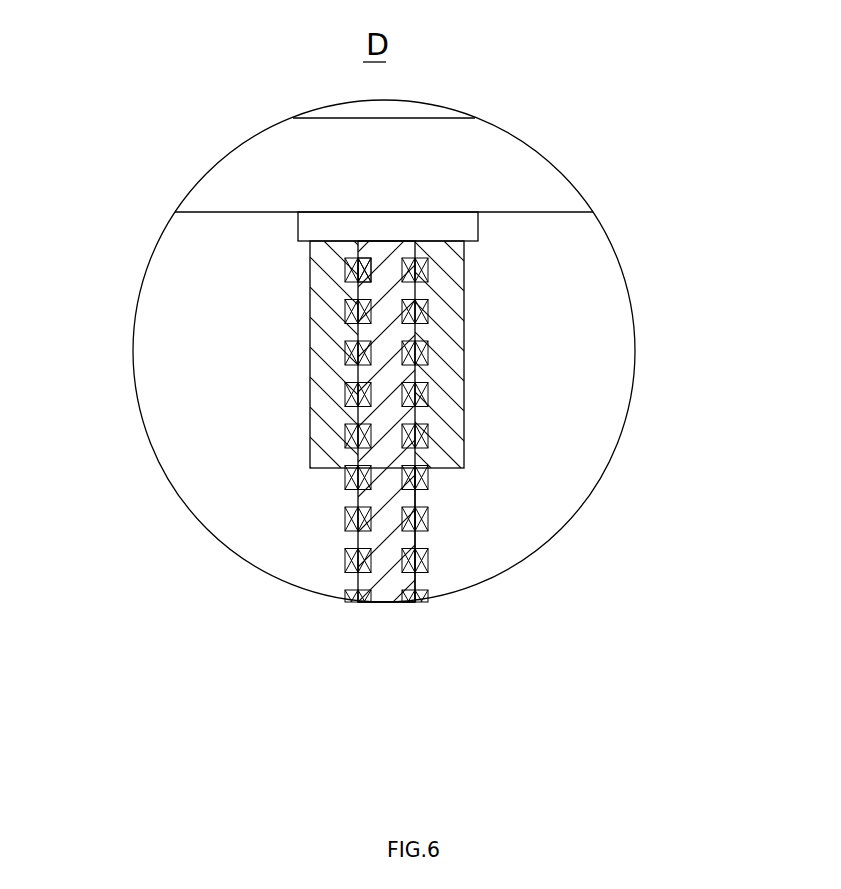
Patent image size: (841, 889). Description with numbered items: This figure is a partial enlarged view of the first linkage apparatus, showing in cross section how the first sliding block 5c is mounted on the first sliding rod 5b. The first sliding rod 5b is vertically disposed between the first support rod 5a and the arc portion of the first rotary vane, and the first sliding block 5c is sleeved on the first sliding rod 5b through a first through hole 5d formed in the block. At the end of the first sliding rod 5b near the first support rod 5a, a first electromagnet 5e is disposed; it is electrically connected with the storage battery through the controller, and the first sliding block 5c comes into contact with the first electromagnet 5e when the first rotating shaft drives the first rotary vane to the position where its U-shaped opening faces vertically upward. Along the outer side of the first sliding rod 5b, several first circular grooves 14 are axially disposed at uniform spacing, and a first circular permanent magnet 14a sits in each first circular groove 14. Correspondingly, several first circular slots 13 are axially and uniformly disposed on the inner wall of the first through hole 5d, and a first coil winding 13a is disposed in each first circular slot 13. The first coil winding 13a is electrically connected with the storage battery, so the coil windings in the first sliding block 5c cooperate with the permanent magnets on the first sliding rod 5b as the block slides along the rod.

The first support rod 5a is at (495, 175).
The first sliding rod 5b is at (390, 595).
The first sliding block 5c is at (335, 244).
The first through hole 5d is at (417, 473).
The first electromagnet 5e is at (327, 223).
The first circular slot 13 is at (353, 437).
The first coil winding 13a is at (353, 393).
The first circular groove 14 is at (432, 272).
The first circular permanent magnet 14a is at (433, 400).